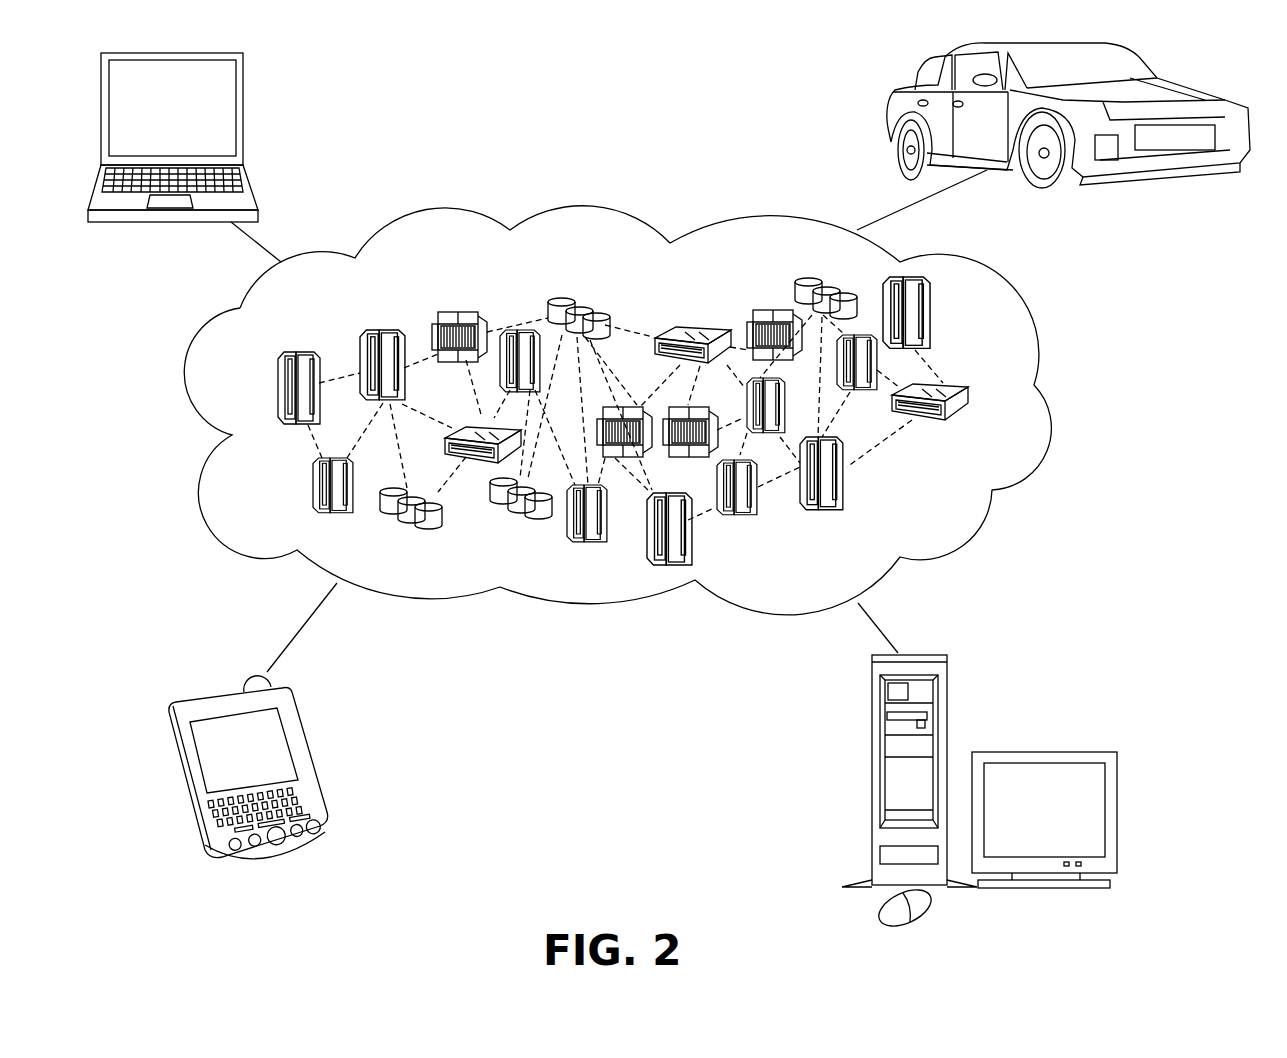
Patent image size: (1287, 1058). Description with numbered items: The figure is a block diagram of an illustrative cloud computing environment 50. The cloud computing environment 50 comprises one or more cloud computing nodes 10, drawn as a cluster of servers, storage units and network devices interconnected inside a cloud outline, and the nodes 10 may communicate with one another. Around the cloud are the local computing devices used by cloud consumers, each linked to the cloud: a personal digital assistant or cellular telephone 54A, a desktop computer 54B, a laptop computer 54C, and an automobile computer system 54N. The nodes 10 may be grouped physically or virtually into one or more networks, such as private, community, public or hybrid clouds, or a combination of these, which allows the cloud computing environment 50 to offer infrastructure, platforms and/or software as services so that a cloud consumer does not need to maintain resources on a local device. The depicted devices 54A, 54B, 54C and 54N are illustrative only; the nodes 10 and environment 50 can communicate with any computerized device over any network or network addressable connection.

The cloud computing node 10 is at (947, 502).
The cloud computing environment 50 is at (1040, 402).
The personal digital assistant or cellular telephone 54A is at (300, 732).
The desktop computer 54B is at (870, 715).
The laptop computer 54C is at (246, 93).
The automobile computer system 54N is at (889, 108).